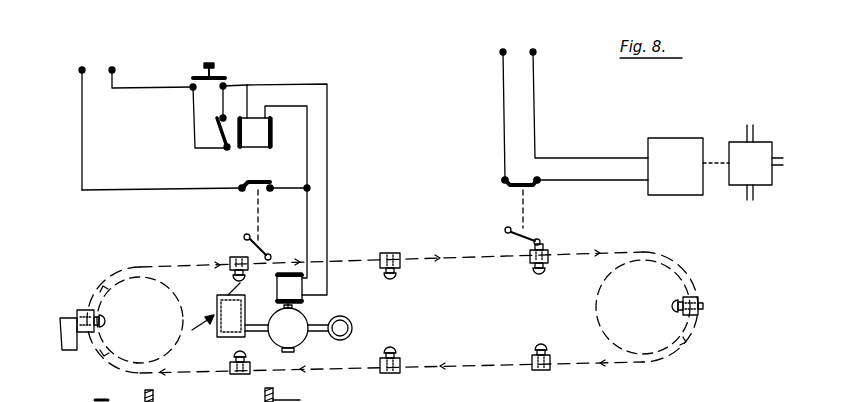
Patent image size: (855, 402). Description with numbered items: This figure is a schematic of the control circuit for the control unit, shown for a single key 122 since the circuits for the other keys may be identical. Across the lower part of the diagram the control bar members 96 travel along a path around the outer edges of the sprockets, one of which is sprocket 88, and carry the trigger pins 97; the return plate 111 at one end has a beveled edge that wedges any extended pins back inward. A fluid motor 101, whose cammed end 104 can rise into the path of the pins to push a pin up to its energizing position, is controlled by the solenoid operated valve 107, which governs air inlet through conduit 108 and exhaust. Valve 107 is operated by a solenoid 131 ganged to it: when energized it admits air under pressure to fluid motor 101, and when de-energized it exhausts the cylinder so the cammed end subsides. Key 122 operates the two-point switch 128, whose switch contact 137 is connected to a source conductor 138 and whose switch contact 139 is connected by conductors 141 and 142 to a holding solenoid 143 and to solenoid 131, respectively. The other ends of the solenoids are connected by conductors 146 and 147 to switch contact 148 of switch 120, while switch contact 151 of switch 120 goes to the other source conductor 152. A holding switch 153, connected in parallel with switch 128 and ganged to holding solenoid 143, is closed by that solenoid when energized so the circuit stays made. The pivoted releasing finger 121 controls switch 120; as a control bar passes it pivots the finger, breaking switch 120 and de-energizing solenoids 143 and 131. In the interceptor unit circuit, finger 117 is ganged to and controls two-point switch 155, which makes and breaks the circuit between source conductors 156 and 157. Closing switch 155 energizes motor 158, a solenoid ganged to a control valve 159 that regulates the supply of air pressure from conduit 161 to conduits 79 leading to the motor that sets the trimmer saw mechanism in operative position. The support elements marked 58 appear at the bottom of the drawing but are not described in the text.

The support frame 58 is at (197, 394).
The conduits 79 is at (781, 170).
The sprocket 88 is at (172, 347).
The control bar members 96 is at (231, 260).
The trigger pins 97 is at (233, 274).
The fluid motor 101 is at (199, 329).
The cammed end 104 is at (222, 294).
The solenoid operated valve 107 is at (300, 342).
The conduit 108 is at (353, 326).
The trigger pin return plate 111 is at (60, 336).
The finger 117 is at (536, 236).
The switch 120 is at (250, 180).
The pivoted releasing finger 121 is at (268, 250).
The key 122 is at (214, 65).
The switch 128 is at (203, 76).
The solenoid 131 is at (277, 290).
The switch contact 137 is at (190, 89).
The source conductor 138 is at (121, 92).
The switch contact 139 is at (227, 86).
The conductor 141 is at (249, 103).
The conductor 142 is at (328, 130).
The holding solenoid 143 is at (260, 136).
The conductor 146 is at (306, 140).
The conductor 147 is at (306, 218).
The switch contact 148 is at (271, 190).
The switch contact 151 is at (239, 190).
The source conductor 152 is at (114, 191).
The holding switch 153 is at (216, 128).
The two-point switch 155 is at (536, 188).
The source conductor 156 is at (503, 100).
The source conductor 157 is at (536, 96).
The motor 158 is at (679, 143).
The control valve 159 is at (742, 178).
The conduit 161 is at (754, 128).